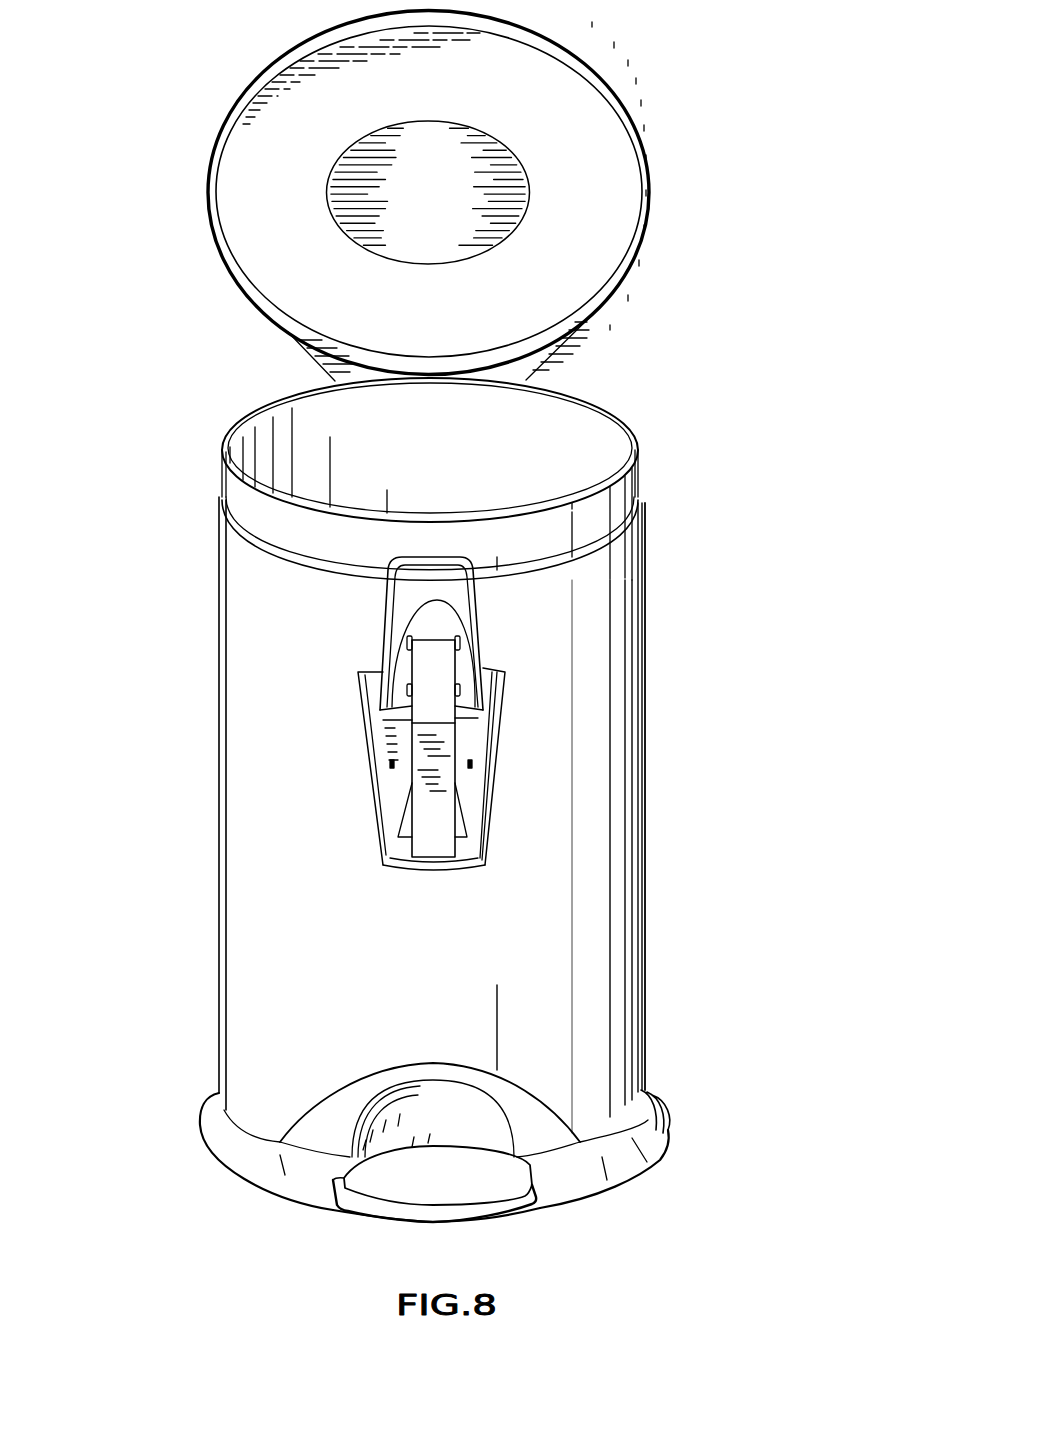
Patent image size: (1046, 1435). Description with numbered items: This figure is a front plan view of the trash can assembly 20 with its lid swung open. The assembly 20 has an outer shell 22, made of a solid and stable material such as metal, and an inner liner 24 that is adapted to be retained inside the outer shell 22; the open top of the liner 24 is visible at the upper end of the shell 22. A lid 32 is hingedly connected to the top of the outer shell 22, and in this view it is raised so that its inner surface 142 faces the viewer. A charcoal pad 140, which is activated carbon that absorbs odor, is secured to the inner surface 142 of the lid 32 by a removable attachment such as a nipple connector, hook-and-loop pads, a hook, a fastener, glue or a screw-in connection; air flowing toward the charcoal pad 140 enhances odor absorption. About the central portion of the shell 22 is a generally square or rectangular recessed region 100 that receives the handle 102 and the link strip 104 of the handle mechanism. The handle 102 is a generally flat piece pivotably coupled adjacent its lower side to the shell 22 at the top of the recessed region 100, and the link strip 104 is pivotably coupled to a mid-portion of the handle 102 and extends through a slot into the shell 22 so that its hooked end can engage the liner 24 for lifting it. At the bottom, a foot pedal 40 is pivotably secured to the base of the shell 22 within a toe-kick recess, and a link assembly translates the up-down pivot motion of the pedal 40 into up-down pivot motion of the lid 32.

The trash can assembly 20 is at (683, 603).
The outer shell 22 is at (639, 694).
The inner liner 24 is at (620, 418).
The lid 32 is at (649, 220).
The foot pedal 40 is at (506, 1188).
The recessed region 100 is at (470, 733).
The handle 102 is at (483, 617).
The link strip 104 is at (443, 817).
The charcoal pad 140 is at (489, 146).
The inner surface 142 is at (594, 232).